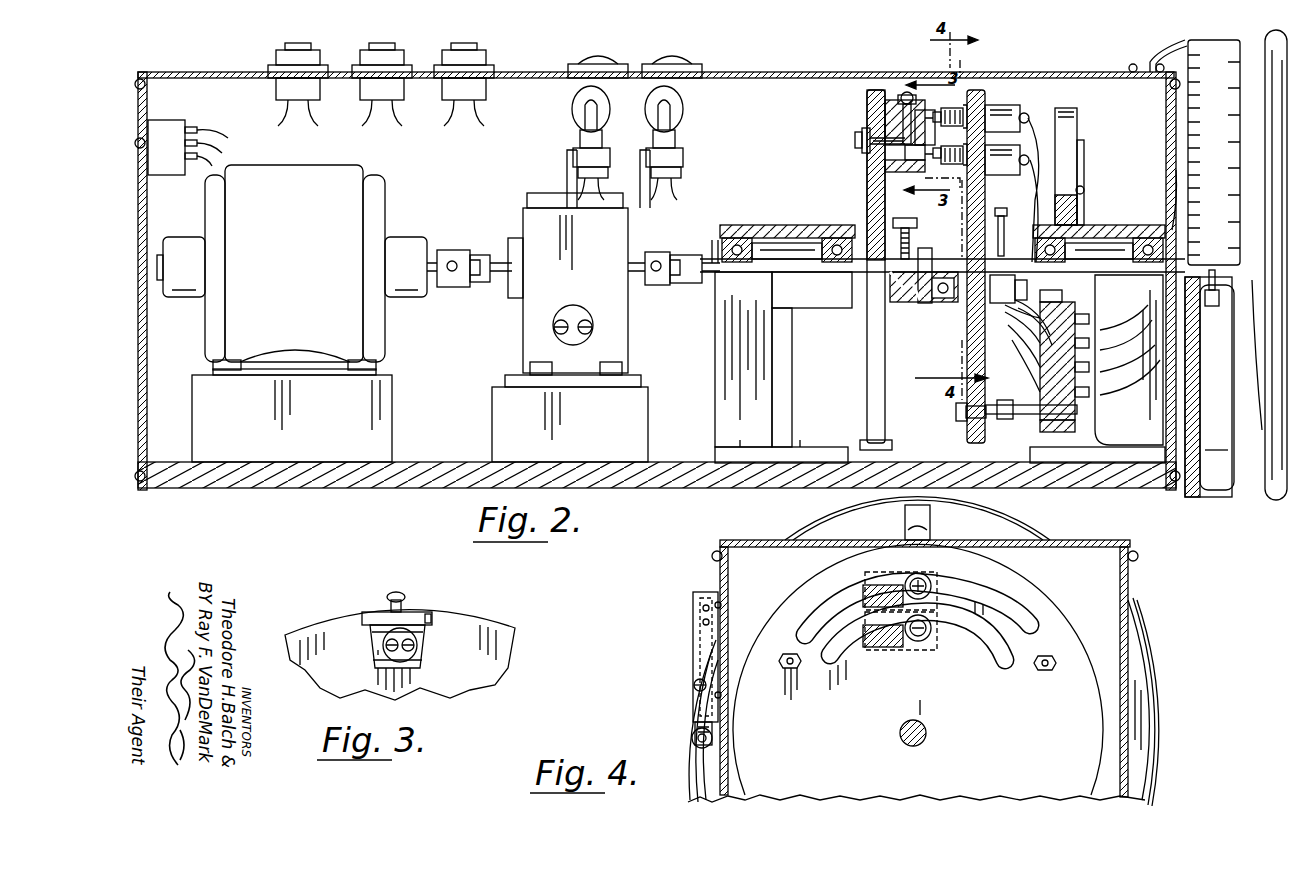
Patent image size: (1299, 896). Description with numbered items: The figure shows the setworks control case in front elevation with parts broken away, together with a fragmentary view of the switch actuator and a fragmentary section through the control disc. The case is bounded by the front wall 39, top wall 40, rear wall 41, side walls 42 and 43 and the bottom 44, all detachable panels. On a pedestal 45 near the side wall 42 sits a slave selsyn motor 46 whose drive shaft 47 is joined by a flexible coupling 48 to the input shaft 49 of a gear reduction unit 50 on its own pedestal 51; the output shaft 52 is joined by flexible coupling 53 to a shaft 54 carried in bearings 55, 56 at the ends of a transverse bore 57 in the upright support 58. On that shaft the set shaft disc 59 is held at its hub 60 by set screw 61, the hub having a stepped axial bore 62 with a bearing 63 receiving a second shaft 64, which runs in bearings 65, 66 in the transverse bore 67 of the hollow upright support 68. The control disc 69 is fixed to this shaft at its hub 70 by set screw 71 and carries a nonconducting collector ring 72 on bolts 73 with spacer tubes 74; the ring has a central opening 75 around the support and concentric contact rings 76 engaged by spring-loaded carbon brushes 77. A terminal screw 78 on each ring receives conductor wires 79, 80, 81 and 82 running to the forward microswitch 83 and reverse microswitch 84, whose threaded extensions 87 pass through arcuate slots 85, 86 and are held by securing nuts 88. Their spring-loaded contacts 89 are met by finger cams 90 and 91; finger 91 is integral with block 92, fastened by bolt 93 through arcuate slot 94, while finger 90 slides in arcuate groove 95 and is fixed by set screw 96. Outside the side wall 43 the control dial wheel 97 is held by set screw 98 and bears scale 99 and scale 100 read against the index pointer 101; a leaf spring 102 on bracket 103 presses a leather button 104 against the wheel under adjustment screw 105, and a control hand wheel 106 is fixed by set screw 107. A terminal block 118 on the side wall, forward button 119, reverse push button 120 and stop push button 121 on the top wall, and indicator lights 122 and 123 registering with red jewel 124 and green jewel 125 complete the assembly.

In FIG. 4, the front wall 39 is at (1128, 590).
In FIG. 2, the top wall 40 is at (776, 72).
In FIG. 4, the top wall 40 is at (768, 540).
In FIG. 4, the rear wall 41 is at (720, 578).
In FIG. 2, the side wall 42 is at (146, 338).
In FIG. 2, the side wall 43 is at (1166, 150).
In FIG. 2, the bottom 44 is at (308, 486).
In FIG. 2, the pedestal 45 is at (382, 398).
In FIG. 2, the slave selsyn motor 46 is at (292, 270).
In FIG. 2, the drive shaft 47 is at (432, 288).
In FIG. 2, the flexible coupling 48 is at (468, 288).
In FIG. 2, the input shaft 49 is at (512, 250).
In FIG. 2, the gear reduction unit 50 is at (573, 290).
In FIG. 2, the pedestal 51 is at (494, 420).
In FIG. 2, the output shaft 52 is at (648, 288).
In FIG. 2, the flexible coupling 53 is at (685, 285).
In FIG. 2, the shaft 54 is at (712, 290).
In FIG. 2, the bearing 55 is at (734, 240).
In FIG. 2, the bearing 56 is at (836, 240).
In FIG. 2, the transverse bore 57 is at (778, 248).
In FIG. 2, the upright support 58 is at (786, 388).
In FIG. 2, the set shaft disc 59 is at (867, 350).
In FIG. 3, the set shaft disc 59 is at (500, 622).
In FIG. 2, the hub 60 is at (922, 300).
In FIG. 2, the set screw 61 is at (914, 223).
In FIG. 2, the stepped axial bore 62 is at (925, 305).
In FIG. 2, the bearing 63 is at (943, 300).
In FIG. 2, the second shaft 64 is at (1118, 245).
In FIG. 4, the second shaft 64 is at (925, 728).
In FIG. 2, the bearing 65 is at (1058, 265).
In FIG. 2, the bearing 66 is at (1150, 240).
In FIG. 2, the transverse bore 67 is at (1100, 248).
In FIG. 2, the upright support 68 is at (1108, 432).
In FIG. 2, the control disc 69 is at (967, 396).
In FIG. 4, the control disc 69 is at (1045, 622).
In FIG. 2, the hub 70 is at (1000, 303).
In FIG. 2, the set screw 71 is at (996, 229).
In FIG. 2, the collector ring 72 is at (1072, 130).
In FIG. 2, the bolts 73 is at (1086, 192).
In FIG. 4, the bolts 73 is at (786, 668).
In FIG. 2, the spacer tubes 74 is at (1035, 205).
In FIG. 2, the central opening 75 is at (1077, 215).
In FIG. 2, the contact rings 76 is at (1085, 162).
In FIG. 2, the carbon brushes 77 is at (1080, 335).
In FIG. 2, the terminal screw 78 is at (1042, 412).
In FIG. 2, the conductor wire 79 is at (1047, 361).
In FIG. 2, the conductor wire 80 is at (1061, 343).
In FIG. 2, the conductor wire 81 is at (1061, 367).
In FIG. 2, the conductor wire 82 is at (1040, 384).
In FIG. 2, the forward microswitch 83 is at (998, 105).
In FIG. 4, the forward microswitch 83 is at (868, 592).
In FIG. 2, the reverse microswitch 84 is at (1010, 158).
In FIG. 4, the reverse microswitch 84 is at (882, 647).
In FIG. 4, the arcuate slot 85 is at (806, 626).
In FIG. 4, the arcuate slot 86 is at (834, 658).
In FIG. 2, the threaded extensions 87 is at (954, 136).
In FIG. 2, the securing nuts 88 is at (968, 100).
In FIG. 4, the securing nuts 88 is at (932, 582).
In FIG. 2, the spring-loaded contacts 89 is at (938, 112).
In FIG. 4, the spring-loaded contacts 89 is at (920, 584).
In FIG. 2, the finger cam 90 is at (915, 100).
In FIG. 3, the finger cam 90 is at (364, 623).
In FIG. 2, the finger cam 91 is at (918, 160).
In FIG. 3, the finger cam 91 is at (418, 665).
In FIG. 2, the block 92 is at (885, 165).
In FIG. 3, the block 92 is at (372, 645).
In FIG. 2, the bolt 93 is at (856, 140).
In FIG. 3, the bolt 93 is at (418, 650).
In FIG. 2, the arcuate slot 94 is at (928, 127).
In FIG. 3, the arcuate slot 94 is at (380, 652).
In FIG. 3, the arcuate groove 95 is at (432, 618).
In FIG. 2, the set screw 96 is at (898, 98).
In FIG. 3, the set screw 96 is at (402, 598).
In FIG. 2, the control dial wheel 97 is at (1212, 497).
In FIG. 4, the control dial wheel 97 is at (1140, 668).
In FIG. 2, the set screw 98 is at (1214, 308).
In FIG. 2, the scale 99 is at (1188, 125).
In FIG. 2, the scale 100 is at (1266, 75).
In FIG. 2, the index pointer 101 is at (1172, 42).
In FIG. 4, the index pointer 101 is at (935, 520).
In FIG. 2, the leaf spring 102 is at (1176, 180).
In FIG. 4, the leaf spring 102 is at (696, 722).
In FIG. 4, the bracket 103 is at (700, 643).
In FIG. 4, the leather button 104 is at (692, 738).
In FIG. 4, the adjustment screw 105 is at (695, 682).
In FIG. 2, the control hand wheel 106 is at (1278, 500).
In FIG. 4, the control hand wheel 106 is at (1160, 728).
In FIG. 2, the set screw 107 is at (1255, 345).
In FIG. 2, the terminal block 118 is at (170, 176).
In FIG. 2, the forward button 119 is at (380, 43).
In FIG. 2, the reverse push button 120 is at (462, 43).
In FIG. 2, the stop push button 121 is at (296, 43).
In FIG. 2, the indicator light 122 is at (582, 100).
In FIG. 2, the indicator light 123 is at (672, 108).
In FIG. 2, the red colored jewel 124 is at (600, 56).
In FIG. 2, the green colored jewel 125 is at (673, 56).